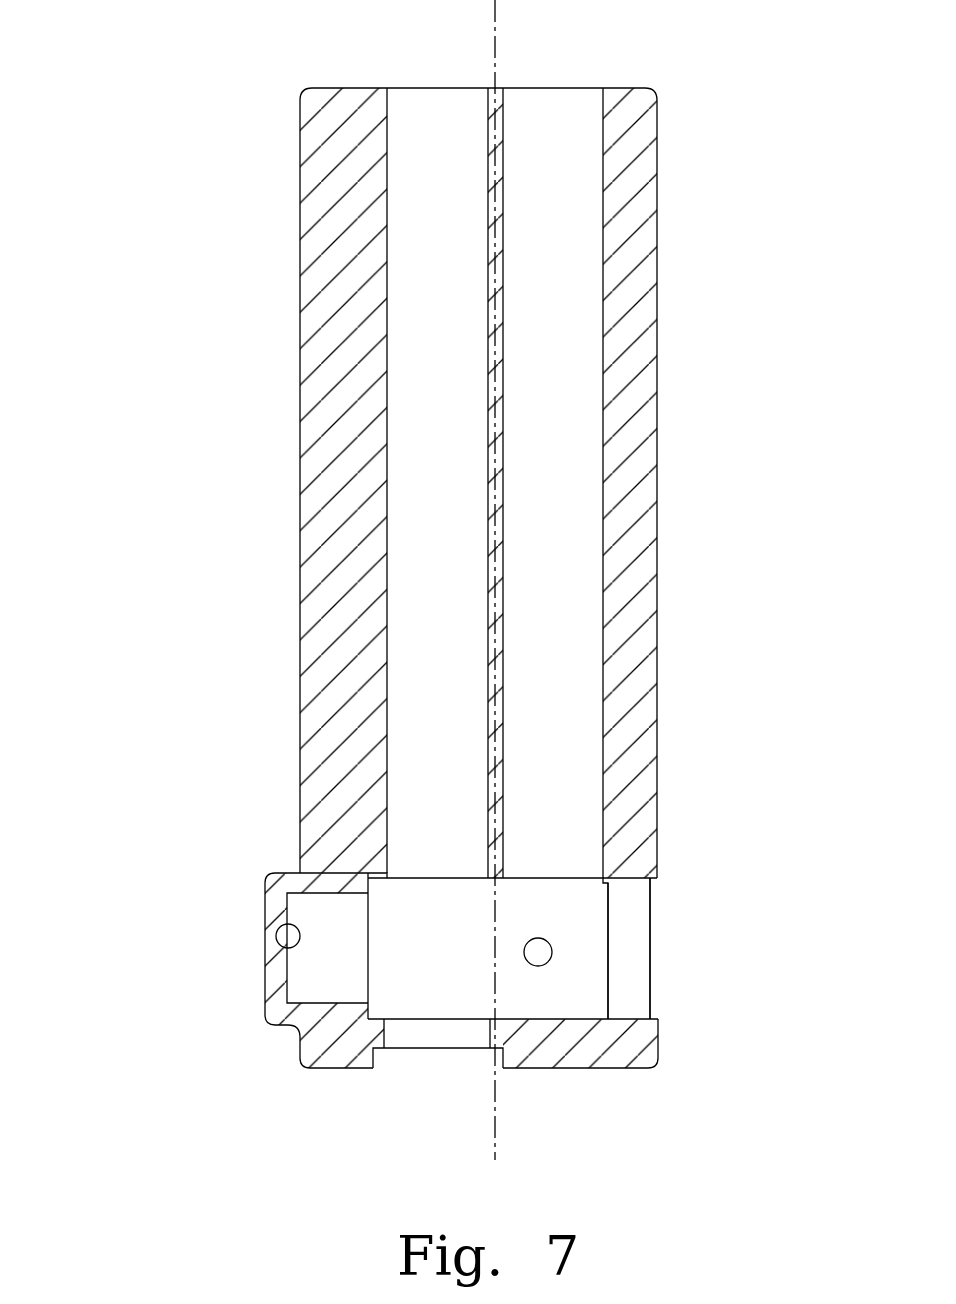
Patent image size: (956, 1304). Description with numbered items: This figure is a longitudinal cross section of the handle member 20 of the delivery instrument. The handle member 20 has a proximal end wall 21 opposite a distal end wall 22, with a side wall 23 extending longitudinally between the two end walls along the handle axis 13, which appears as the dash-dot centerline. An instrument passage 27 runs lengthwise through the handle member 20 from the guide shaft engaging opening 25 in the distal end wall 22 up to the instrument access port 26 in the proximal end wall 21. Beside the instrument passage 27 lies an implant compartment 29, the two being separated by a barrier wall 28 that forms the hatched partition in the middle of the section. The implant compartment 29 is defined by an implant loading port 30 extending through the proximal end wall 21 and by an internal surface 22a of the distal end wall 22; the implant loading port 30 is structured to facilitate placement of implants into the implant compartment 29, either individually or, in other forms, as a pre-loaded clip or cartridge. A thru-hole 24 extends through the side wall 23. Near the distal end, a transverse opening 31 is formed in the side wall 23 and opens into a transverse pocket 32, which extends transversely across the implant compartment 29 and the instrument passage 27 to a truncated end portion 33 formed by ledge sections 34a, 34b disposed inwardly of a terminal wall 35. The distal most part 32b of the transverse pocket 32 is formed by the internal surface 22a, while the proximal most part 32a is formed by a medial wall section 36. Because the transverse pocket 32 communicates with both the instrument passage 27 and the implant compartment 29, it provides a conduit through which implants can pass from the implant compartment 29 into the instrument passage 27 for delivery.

The handle member 20 is at (185, 98).
The handle axis 13 is at (500, 1128).
The proximal end wall 21 is at (620, 88).
The distal end wall 22 is at (612, 1070).
The internal surface 22a is at (623, 1020).
The side wall 23 is at (635, 603).
The thru-hole 24 is at (548, 953).
The guide shaft engaging opening 25 is at (478, 1062).
The instrument access port 26 is at (428, 88).
The instrument passage 27 is at (423, 393).
The barrier wall 28 is at (488, 310).
The implant compartment 29 is at (587, 355).
The implant loading port 30 is at (565, 88).
The transverse opening 31 is at (655, 884).
The transverse pocket 32 is at (588, 975).
The proximal most part 32a is at (660, 878).
The distal most part 32b is at (625, 1020).
The truncated end portion 33 is at (348, 958).
The ledge section 34a is at (378, 872).
The ledge section 34b is at (378, 1040).
The terminal wall 35 is at (277, 936).
The medial wall section 36 is at (605, 880).